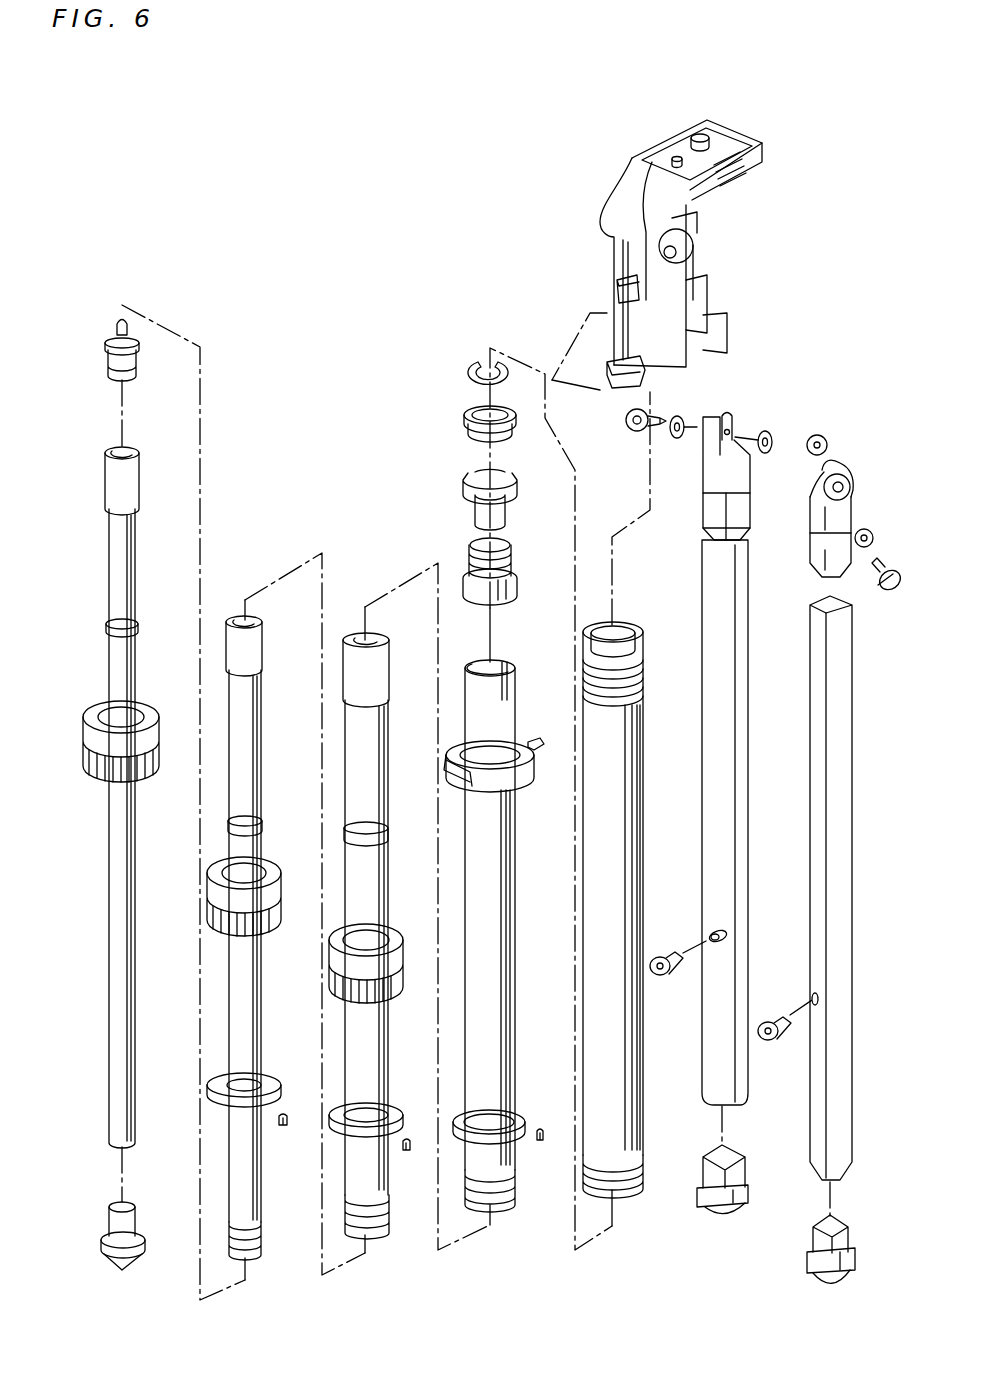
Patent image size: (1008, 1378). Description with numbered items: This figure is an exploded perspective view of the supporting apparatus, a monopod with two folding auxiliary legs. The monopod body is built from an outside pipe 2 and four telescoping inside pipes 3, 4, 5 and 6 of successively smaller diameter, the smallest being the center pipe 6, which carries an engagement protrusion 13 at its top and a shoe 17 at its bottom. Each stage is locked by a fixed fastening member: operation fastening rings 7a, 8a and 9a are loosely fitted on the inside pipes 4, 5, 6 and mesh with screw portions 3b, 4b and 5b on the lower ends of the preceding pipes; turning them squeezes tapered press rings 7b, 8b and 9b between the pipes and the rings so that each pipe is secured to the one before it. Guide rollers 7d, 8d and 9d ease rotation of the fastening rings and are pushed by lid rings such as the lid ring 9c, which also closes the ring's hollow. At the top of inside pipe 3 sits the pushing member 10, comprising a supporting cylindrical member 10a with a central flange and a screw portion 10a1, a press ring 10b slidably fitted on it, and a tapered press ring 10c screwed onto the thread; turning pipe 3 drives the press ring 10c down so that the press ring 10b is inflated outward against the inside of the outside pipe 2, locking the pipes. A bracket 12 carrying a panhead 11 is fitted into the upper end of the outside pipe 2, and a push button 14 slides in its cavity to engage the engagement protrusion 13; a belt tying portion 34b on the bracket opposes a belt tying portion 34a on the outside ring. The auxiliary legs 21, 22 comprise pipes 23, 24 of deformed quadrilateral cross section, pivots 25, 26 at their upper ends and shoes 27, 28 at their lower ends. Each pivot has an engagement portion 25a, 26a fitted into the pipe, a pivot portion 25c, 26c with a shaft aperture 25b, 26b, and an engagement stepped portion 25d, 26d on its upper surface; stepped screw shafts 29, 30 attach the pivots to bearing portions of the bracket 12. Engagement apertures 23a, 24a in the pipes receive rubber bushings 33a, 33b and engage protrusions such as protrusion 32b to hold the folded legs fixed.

The outside pipe 2 is at (628, 813).
The inside pipe 3 is at (506, 908).
The screw portion 3b is at (511, 1212).
The inside pipe 4 is at (375, 904).
The screw portion 4b is at (386, 1222).
The inside pipe 5 is at (255, 988).
The screw portion 5b is at (263, 1240).
The center pipe 6 is at (129, 884).
The operation fastening ring 7a is at (398, 975).
The tapered press ring 7b is at (388, 832).
The guide roller 7d is at (536, 1138).
The operation fastening ring 8a is at (280, 897).
The tapered press ring 8b is at (262, 826).
The guide roller 8d is at (402, 1148).
The operation fastening ring 9a is at (143, 762).
The tapered press ring 9b is at (139, 630).
The lid ring 9c is at (267, 1092).
The guide roller 9d is at (278, 1122).
The pushing member 10 is at (438, 456).
The supporting cylindrical member 10a is at (475, 588).
The screw portion 10a1 is at (470, 547).
The press ring 10b is at (497, 512).
The tapered press ring 10c is at (467, 413).
The panhead 11 is at (735, 150).
The bracket 12 is at (680, 318).
The engagement protrusion 13 is at (134, 333).
The push button 14 is at (615, 287).
The shoe 17 is at (128, 1260).
The auxiliary leg 21 is at (757, 747).
The auxiliary leg 22 is at (857, 747).
The pipe 23 is at (745, 848).
The engagement aperture 23a is at (710, 932).
The pipe 24 is at (845, 848).
The engagement aperture 24a is at (812, 1000).
The pivot 25 is at (736, 482).
The engagement portion 25a is at (714, 512).
The shaft aperture 25b is at (817, 435).
The pivot portion 25c is at (716, 453).
The engagement stepped portion 25d is at (728, 412).
The pivot 26 is at (812, 515).
The engagement portion 26a is at (818, 543).
The shaft aperture 26b is at (845, 483).
The pivot portion 26c is at (822, 475).
The engagement stepped portion 26d is at (845, 463).
The shoe 27 is at (742, 1203).
The shoe 28 is at (813, 1273).
The stepped screw shaft 29 is at (637, 433).
The stepped screw shaft 30 is at (887, 593).
The protrusion 32b is at (535, 740).
The rubber bushing 33a is at (678, 980).
The rubber bushing 33b is at (785, 1040).
The belt tying portion 34a is at (452, 778).
The belt tying portion 34b is at (627, 380).